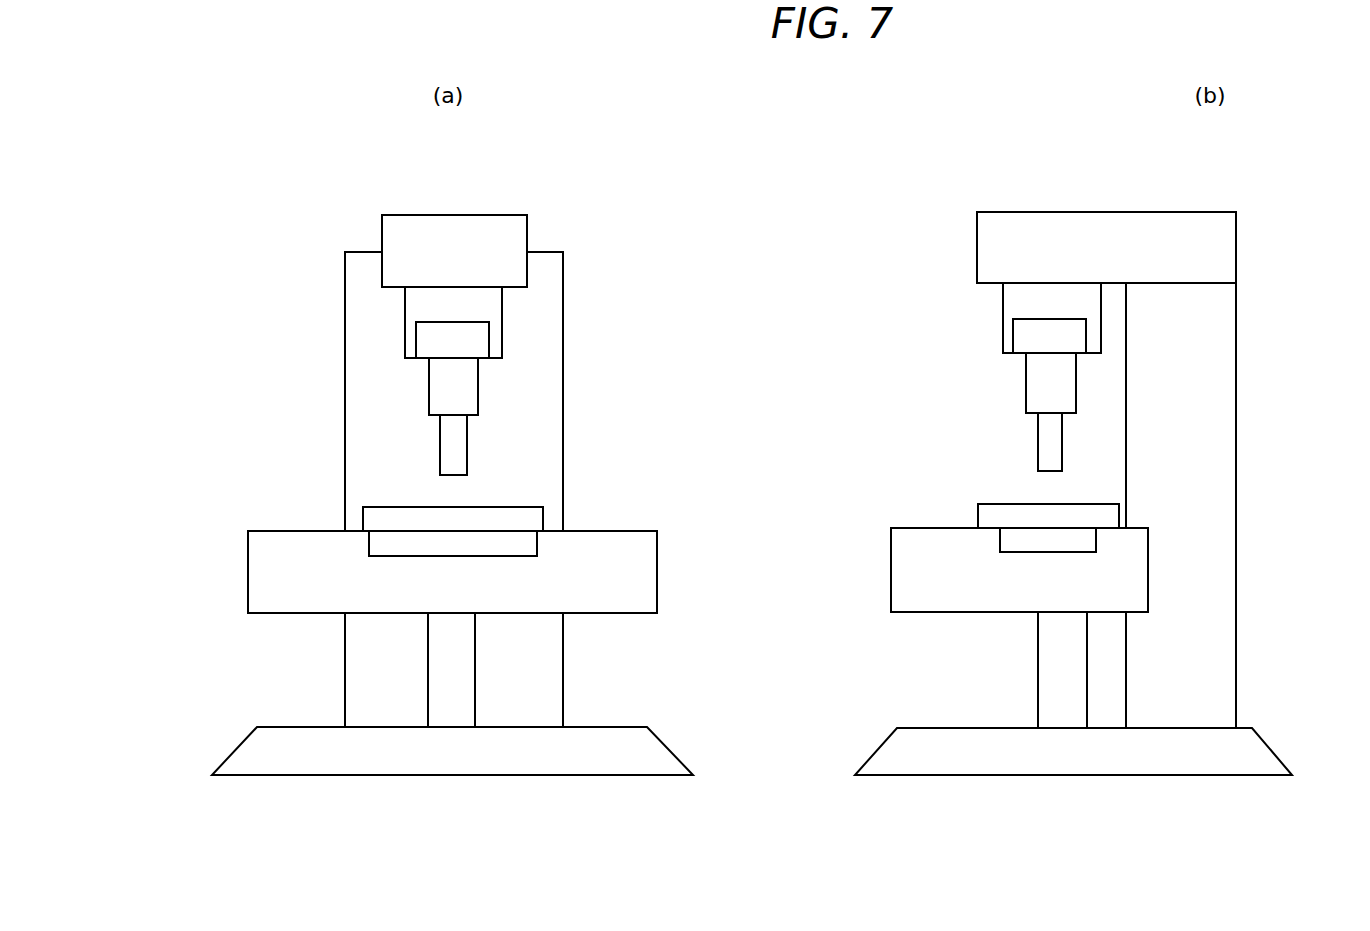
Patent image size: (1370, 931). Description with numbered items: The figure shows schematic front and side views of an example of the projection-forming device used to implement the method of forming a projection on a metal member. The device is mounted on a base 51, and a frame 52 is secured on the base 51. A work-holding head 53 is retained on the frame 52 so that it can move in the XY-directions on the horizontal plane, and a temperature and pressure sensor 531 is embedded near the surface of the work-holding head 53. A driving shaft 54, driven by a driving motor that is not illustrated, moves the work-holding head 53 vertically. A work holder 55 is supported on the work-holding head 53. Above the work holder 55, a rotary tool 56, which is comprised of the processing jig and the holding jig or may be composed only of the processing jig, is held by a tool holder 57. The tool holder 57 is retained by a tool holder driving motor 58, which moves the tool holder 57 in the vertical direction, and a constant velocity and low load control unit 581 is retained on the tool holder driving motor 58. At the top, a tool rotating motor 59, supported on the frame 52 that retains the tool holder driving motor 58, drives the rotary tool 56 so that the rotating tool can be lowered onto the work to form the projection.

The base 51 is at (265, 750).
The frame 52 is at (365, 327).
The work-holding head 53 is at (277, 572).
The temperature and pressure sensor 531 is at (525, 540).
The driving shaft 54 is at (462, 651).
The work holder 55 is at (992, 513).
The rotary tool 56 is at (455, 445).
The tool holder 57 is at (1041, 392).
The tool holder driving motor 58 is at (1050, 300).
The constant velocity and low load control unit 581 is at (435, 345).
The tool rotating motor 59 is at (475, 230).